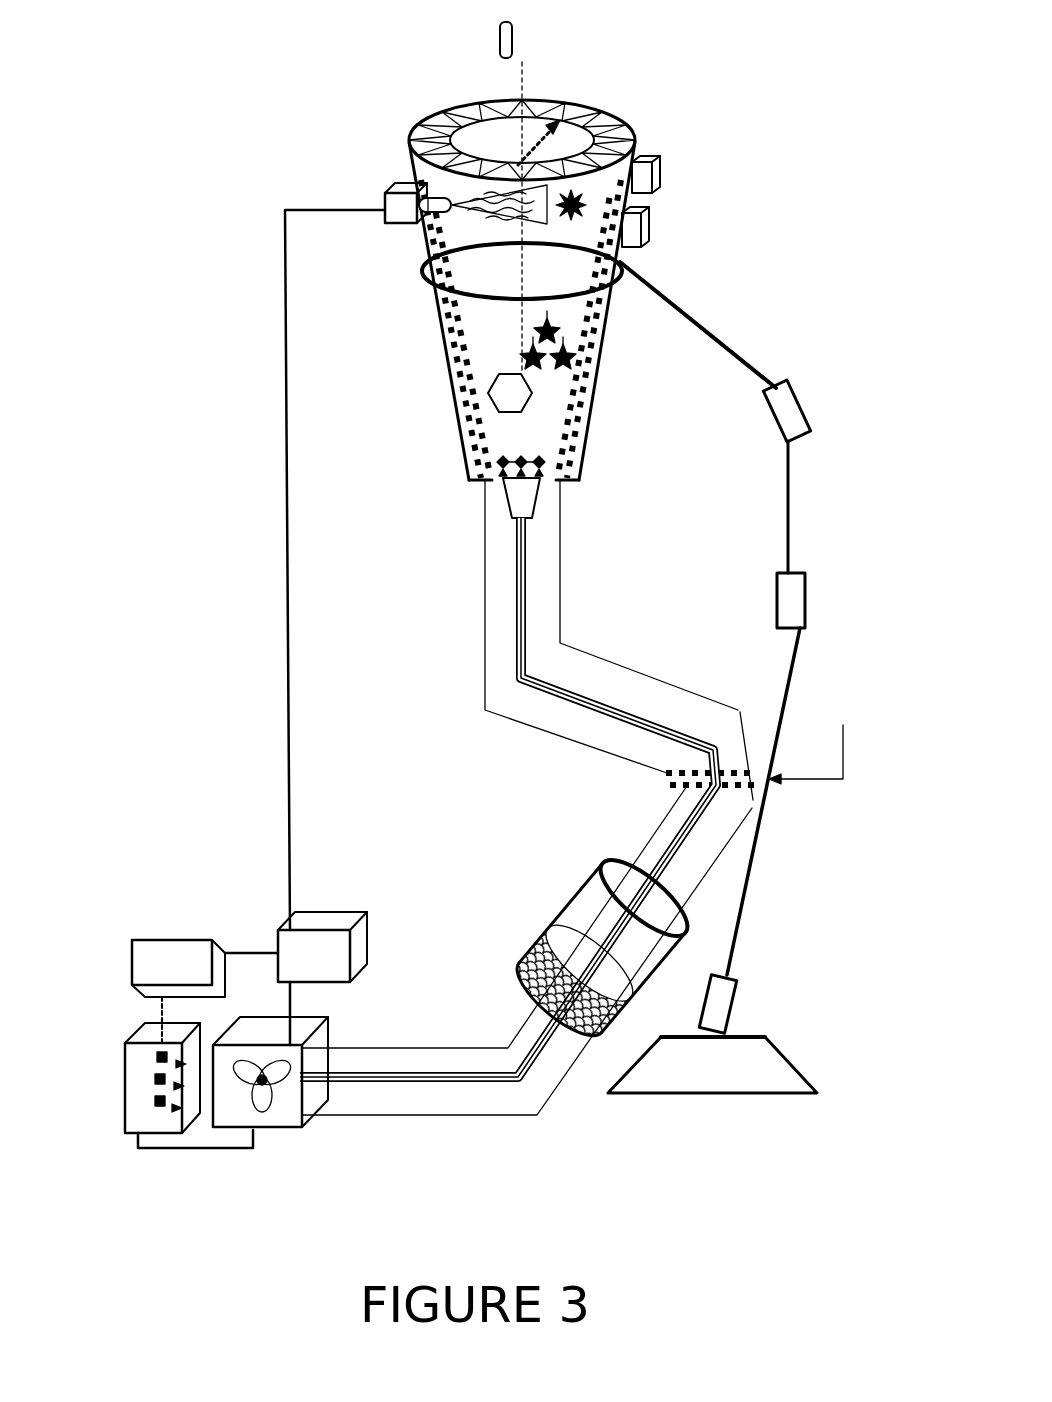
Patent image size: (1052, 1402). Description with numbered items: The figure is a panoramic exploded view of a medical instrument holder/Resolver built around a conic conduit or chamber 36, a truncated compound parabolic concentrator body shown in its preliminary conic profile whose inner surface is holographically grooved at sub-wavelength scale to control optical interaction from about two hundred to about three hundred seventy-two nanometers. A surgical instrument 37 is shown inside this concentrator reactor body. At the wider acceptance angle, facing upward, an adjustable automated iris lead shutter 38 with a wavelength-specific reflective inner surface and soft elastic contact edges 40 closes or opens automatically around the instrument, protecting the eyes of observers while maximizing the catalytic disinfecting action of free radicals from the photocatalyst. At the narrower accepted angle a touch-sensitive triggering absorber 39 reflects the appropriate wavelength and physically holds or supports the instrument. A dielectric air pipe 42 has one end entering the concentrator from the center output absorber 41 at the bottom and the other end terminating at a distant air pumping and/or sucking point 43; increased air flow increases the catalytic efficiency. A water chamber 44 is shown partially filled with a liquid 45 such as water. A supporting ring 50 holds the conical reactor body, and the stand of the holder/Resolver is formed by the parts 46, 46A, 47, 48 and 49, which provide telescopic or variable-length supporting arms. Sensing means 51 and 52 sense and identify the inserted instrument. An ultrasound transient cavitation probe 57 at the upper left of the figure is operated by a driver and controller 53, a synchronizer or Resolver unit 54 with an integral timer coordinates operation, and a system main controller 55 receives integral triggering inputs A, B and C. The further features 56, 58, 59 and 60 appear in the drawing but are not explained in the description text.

The conic conduit or chamber 36 is at (437, 358).
The surgical instrument 37 is at (480, 48).
The automated iris lead shutter 38 is at (482, 150).
The touch-sensitive triggering absorber 39 is at (521, 440).
The soft elastic contact edges 40 is at (556, 96).
The center output absorber 41 is at (495, 513).
The dielectric air pipe 42 is at (400, 1034).
The air pumping and/or sucking point 43 is at (303, 1143).
The water chamber 44 is at (572, 883).
The liquid 45 is at (512, 967).
The stand 46 is at (752, 1107).
The stand part 46A is at (754, 1018).
The supporting arm 47 is at (760, 900).
The supporting arm 48 is at (762, 602).
The supporting arm 49 is at (778, 372).
The supporting ring 50 is at (562, 310).
The sensing means 51 is at (669, 180).
The sensing means 52 is at (666, 240).
The driver and controller 53 is at (328, 902).
The synchronizer or Resolver unit 54 is at (175, 930).
The system main controller 55 is at (118, 1112).
The tube 56 is at (452, 1129).
The ultrasound transient cavitation probe 57 is at (398, 240).
The particles 58 is at (546, 392).
The heat source 59 is at (571, 232).
The outlet 60 is at (552, 449).
The triggering input A is at (176, 1106).
The triggering input B is at (180, 1088).
The triggering input C is at (182, 1070).